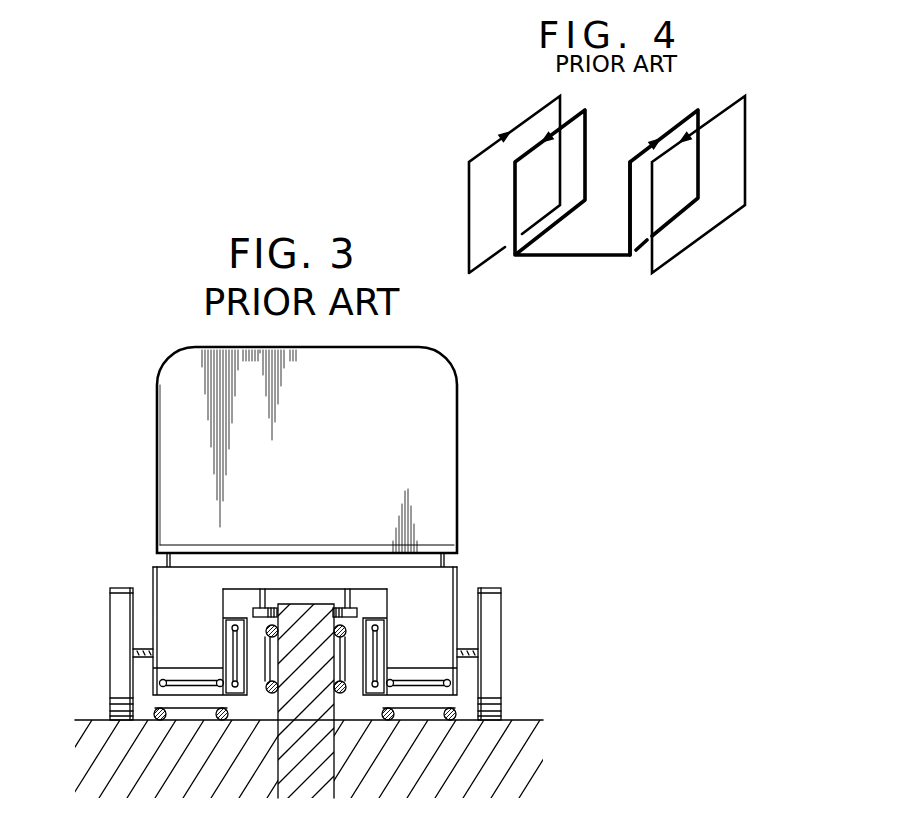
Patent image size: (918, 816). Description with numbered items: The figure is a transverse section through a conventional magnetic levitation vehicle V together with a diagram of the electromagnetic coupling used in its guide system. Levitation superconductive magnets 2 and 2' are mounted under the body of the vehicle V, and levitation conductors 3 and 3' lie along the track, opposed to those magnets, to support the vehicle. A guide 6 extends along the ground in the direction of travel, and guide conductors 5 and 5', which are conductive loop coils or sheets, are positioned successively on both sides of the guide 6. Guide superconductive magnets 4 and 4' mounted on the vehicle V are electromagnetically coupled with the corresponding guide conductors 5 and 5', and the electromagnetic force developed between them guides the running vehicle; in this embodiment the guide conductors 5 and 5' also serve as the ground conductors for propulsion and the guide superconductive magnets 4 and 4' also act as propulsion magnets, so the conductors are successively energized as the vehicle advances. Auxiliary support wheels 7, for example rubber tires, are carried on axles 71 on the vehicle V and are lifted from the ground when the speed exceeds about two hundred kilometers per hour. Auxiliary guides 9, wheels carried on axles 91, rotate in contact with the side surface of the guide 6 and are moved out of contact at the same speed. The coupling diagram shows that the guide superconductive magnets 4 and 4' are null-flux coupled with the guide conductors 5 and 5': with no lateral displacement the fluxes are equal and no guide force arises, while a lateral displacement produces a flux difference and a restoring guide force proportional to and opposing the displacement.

In FIG. 3, the vehicle V is at (447, 407).
In FIG. 3, the levitation superconductive magnet 2 is at (200, 631).
In FIG. 3, the levitation superconductive magnet 2' is at (410, 631).
In FIG. 3, the levitation conductor 3 is at (191, 741).
In FIG. 3, the levitation conductor 3' is at (419, 741).
In FIG. 3, the guide superconductive magnet 4 is at (218, 656).
In FIG. 4, the guide superconductive magnet 4 is at (514, 178).
In FIG. 3, the guide superconductive magnet 4' is at (390, 656).
In FIG. 4, the guide superconductive magnet 4' is at (713, 184).
In FIG. 3, the guide conductor 5 is at (262, 699).
In FIG. 4, the guide conductor 5 is at (572, 176).
In FIG. 3, the guide conductor 5' is at (348, 699).
In FIG. 4, the guide conductor 5' is at (665, 165).
In FIG. 3, the guide 6 is at (303, 677).
In FIG. 3, the auxiliary support wheel 7 is at (114, 665).
In FIG. 3, the axle 71 is at (143, 650).
In FIG. 3, the auxiliary guide 9 is at (253, 610).
In FIG. 3, the axle 91 is at (252, 590).